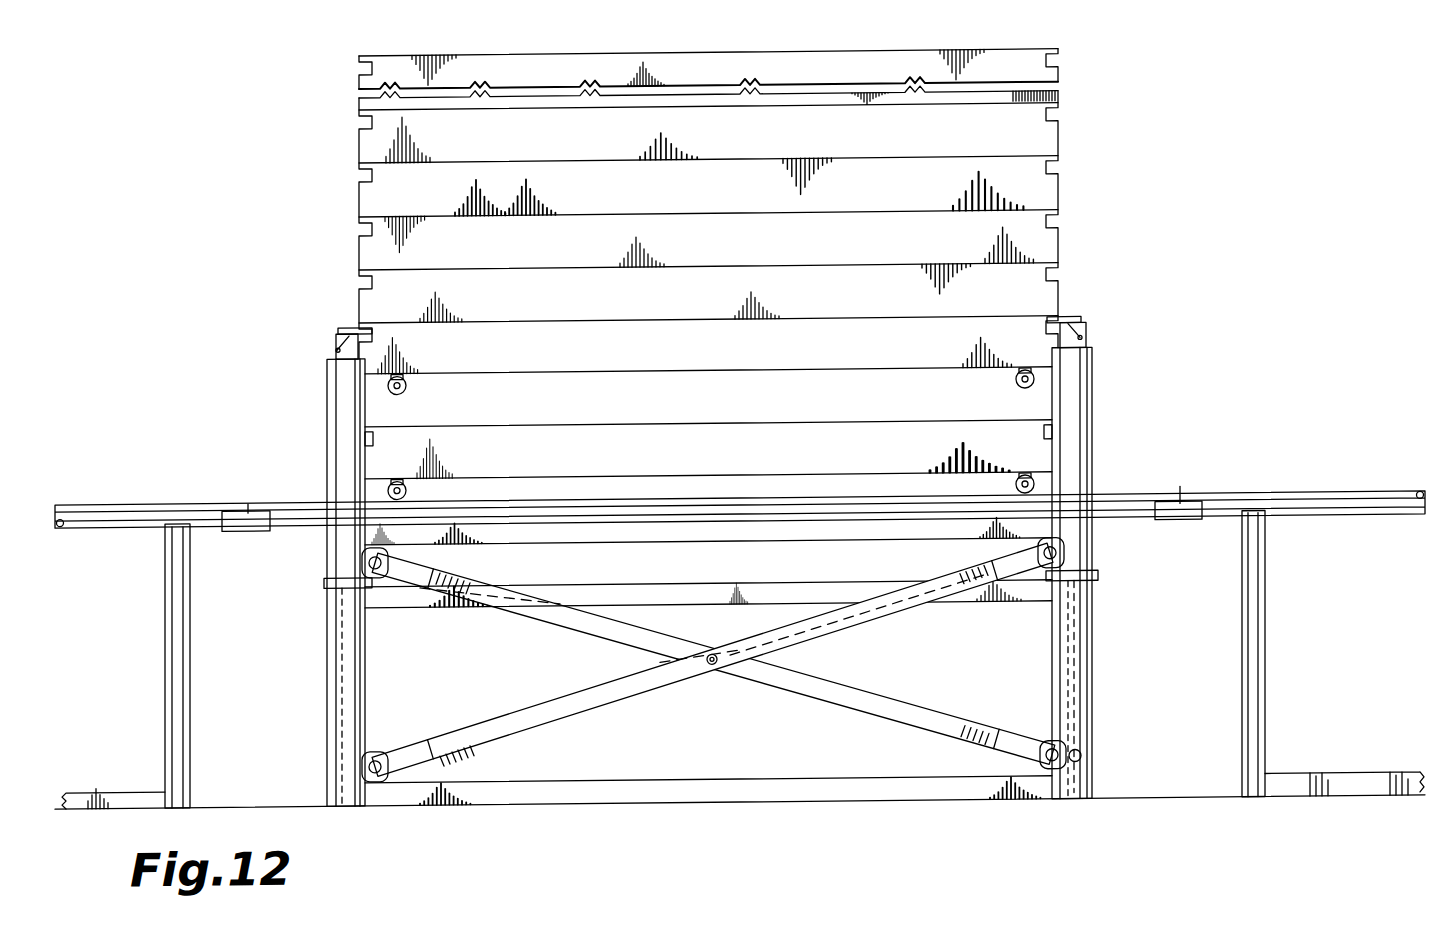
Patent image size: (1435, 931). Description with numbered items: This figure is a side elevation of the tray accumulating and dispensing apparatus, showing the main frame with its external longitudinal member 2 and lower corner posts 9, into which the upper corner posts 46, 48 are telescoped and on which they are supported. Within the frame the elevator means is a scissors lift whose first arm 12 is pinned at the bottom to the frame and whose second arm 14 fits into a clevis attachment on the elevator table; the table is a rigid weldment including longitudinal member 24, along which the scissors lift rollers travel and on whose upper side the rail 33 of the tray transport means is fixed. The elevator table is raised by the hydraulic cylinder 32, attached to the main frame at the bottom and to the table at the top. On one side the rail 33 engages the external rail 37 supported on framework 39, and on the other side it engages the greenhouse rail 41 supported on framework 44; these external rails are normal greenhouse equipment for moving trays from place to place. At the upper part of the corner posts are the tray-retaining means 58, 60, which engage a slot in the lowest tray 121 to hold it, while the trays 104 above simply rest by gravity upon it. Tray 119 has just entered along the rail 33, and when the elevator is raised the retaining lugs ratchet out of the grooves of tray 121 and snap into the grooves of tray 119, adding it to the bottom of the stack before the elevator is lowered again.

The trays 104 is at (1098, 196).
The tray 121 is at (917, 358).
The tray 119 is at (897, 443).
The external longitudinal member 2 is at (659, 599).
The greenhouse rail 41 is at (134, 507).
The rail 33 is at (560, 504).
The external rail 37 is at (1310, 509).
The upper corner post 48 is at (331, 410).
The upper corner post 46 is at (1086, 408).
The lower corner post 9 is at (341, 680).
The tray-retaining means 60 is at (318, 346).
The tray-retaining means 58 is at (1108, 336).
The framework 44 is at (206, 658).
The framework 39 is at (1284, 659).
The second arm 14 is at (546, 627).
The first arm 12 is at (568, 694).
The longitudinal member 24 is at (579, 542).
The hydraulic cylinder 32 is at (1095, 703).